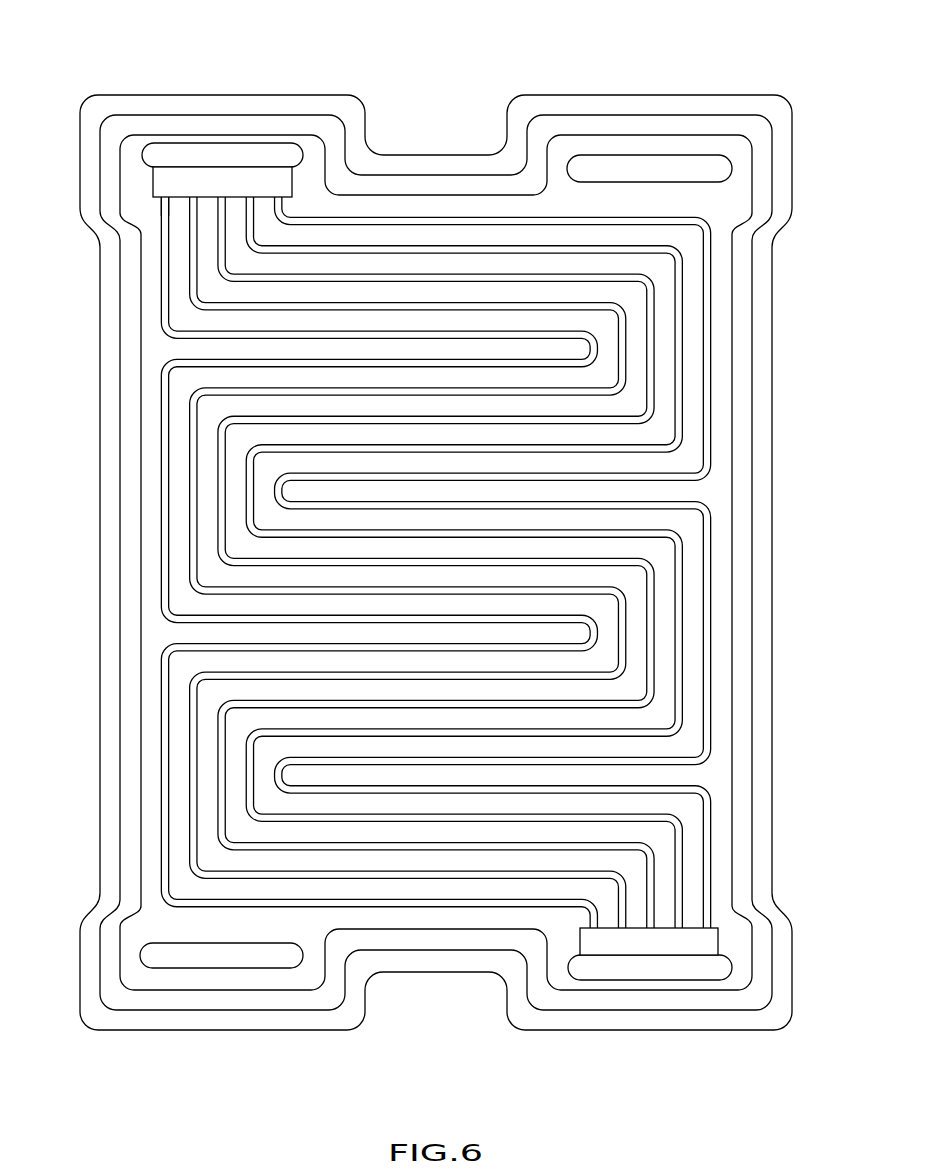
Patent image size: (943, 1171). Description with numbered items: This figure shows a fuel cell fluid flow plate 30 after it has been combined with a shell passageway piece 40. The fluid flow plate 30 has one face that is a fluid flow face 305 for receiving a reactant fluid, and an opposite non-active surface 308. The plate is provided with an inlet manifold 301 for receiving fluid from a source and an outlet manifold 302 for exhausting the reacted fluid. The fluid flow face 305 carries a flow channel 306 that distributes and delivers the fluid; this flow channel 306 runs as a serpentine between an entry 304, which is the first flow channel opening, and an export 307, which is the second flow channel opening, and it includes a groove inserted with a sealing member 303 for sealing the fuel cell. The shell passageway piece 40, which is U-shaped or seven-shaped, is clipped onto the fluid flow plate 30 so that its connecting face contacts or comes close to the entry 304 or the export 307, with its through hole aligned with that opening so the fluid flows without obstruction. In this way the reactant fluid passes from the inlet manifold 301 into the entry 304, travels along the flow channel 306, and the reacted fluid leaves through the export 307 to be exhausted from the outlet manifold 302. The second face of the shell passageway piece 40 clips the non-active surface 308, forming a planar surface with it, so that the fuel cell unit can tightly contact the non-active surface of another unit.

The fluid flow plate 30 is at (560, 58).
The inlet manifold 301 is at (165, 155).
The outlet manifold 302 is at (605, 970).
The shell passageway piece 40 is at (275, 178).
The sealing member 303 is at (128, 882).
The entry 304 is at (163, 203).
The fluid flow face 305 is at (160, 347).
The flow channel 306 is at (163, 278).
The export 307 is at (710, 923).
The non-active surface 308 is at (155, 502).